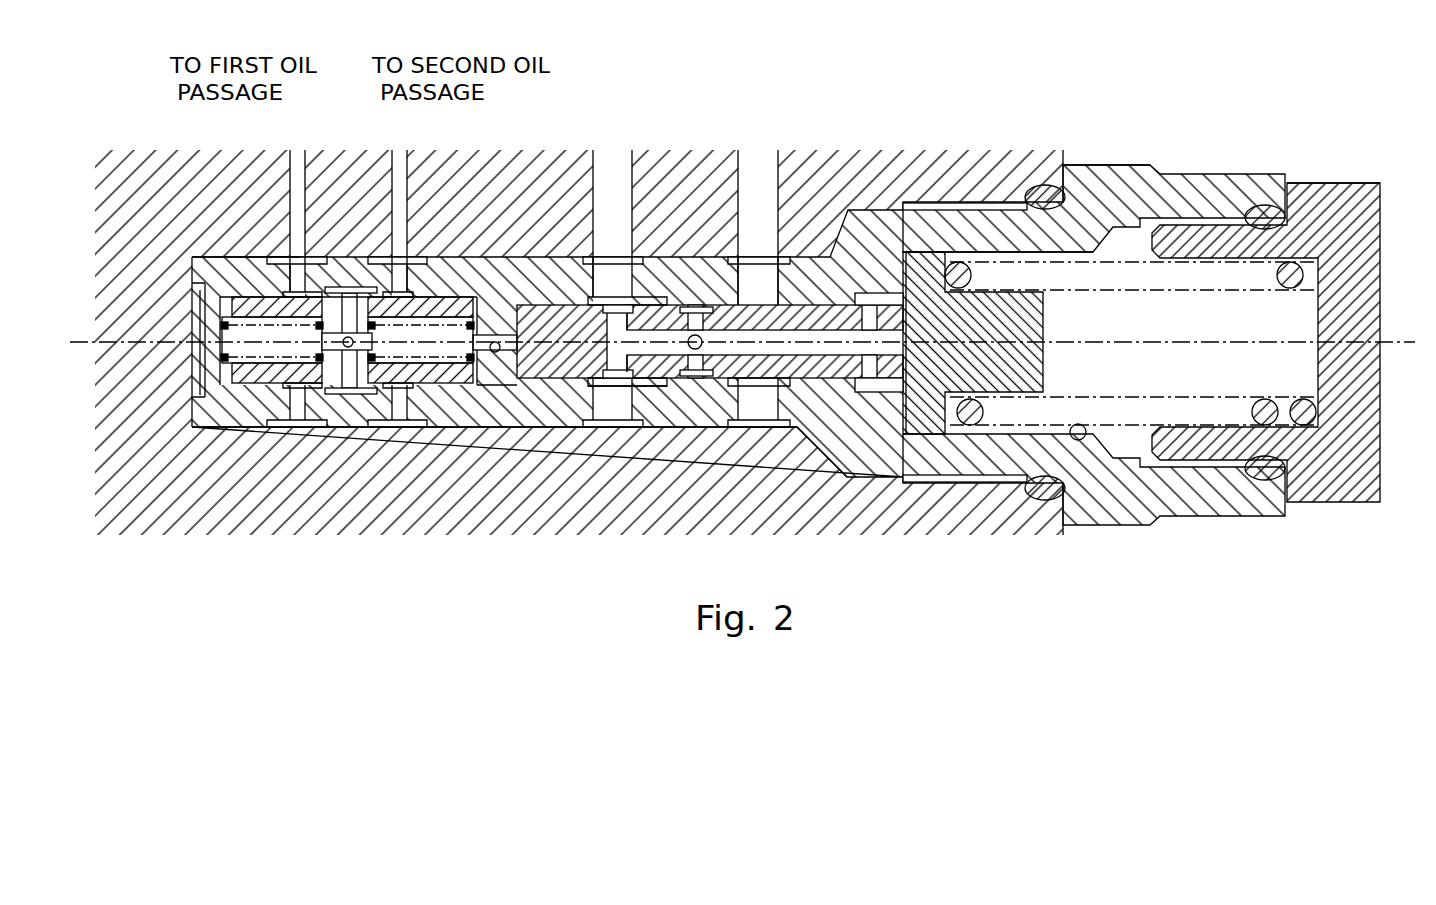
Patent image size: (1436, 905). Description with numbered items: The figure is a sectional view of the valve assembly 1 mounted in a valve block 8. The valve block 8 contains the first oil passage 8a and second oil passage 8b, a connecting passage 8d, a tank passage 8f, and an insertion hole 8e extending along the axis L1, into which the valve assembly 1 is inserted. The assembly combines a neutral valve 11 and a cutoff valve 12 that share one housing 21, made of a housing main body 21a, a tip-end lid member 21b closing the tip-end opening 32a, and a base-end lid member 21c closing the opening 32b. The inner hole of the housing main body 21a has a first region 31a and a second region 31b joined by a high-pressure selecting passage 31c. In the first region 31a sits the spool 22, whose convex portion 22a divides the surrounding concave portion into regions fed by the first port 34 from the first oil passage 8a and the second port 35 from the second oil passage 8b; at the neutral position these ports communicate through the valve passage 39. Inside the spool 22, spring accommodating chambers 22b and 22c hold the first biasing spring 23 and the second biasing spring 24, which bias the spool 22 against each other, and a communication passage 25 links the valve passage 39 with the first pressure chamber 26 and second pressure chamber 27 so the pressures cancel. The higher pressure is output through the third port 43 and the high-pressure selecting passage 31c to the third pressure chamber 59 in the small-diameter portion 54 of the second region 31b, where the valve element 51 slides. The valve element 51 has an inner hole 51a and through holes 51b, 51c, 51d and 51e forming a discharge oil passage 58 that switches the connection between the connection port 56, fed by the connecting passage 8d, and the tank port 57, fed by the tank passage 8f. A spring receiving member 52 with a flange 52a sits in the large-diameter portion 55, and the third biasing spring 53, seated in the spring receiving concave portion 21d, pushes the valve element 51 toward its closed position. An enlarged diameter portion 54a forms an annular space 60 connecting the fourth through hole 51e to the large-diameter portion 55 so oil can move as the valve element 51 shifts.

The valve assembly 1 is at (1262, 72).
The valve block 8 is at (925, 160).
The first oil passage 8a is at (297, 146).
The second oil passage 8b is at (398, 146).
The connecting passage 8d is at (612, 150).
The insertion hole 8e is at (520, 432).
The tank passage 8f is at (760, 150).
The neutral valve 11 is at (215, 232).
The cutoff valve 12 is at (1145, 132).
The housing 21 is at (547, 343).
The housing main body 21a is at (690, 432).
The tip-end lid member 21b is at (150, 359).
The base-end lid member 21c is at (1340, 200).
The spring receiving concave portion 21d is at (1235, 262).
The spool 22 is at (347, 338).
The convex portion 22a is at (342, 292).
The spring accommodating chamber 22b is at (300, 372).
The spring accommodating chamber 22c is at (425, 372).
The first biasing spring 23 is at (205, 328).
The second biasing spring 24 is at (488, 330).
The communication passage 25 is at (355, 392).
The first pressure chamber 26 is at (232, 398).
The second pressure chamber 27 is at (470, 385).
The first region 31a is at (460, 300).
The second region 31b is at (990, 262).
The high-pressure selecting passage 31c is at (518, 428).
The opening 32a is at (200, 292).
The opening 32b is at (1293, 500).
The first port 34 is at (292, 266).
The second port 35 is at (408, 272).
The valve passage 39 is at (350, 284).
The third port 43 is at (530, 322).
The valve element 51 is at (710, 376).
The inner hole 51a is at (808, 322).
The first through hole 51b is at (600, 346).
The second through hole 51c is at (692, 318).
The third through hole 51d is at (695, 378).
The fourth through hole 51e is at (872, 300).
The spring receiving member 52 is at (1028, 348).
The flange 52a is at (908, 430).
The third biasing spring 53 is at (1312, 418).
The small-diameter portion 54 is at (718, 305).
The enlarged diameter portion 54a is at (885, 300).
The large-diameter portion 55 is at (1080, 440).
The connection port 56 is at (605, 263).
The tank port 57 is at (770, 265).
The discharge oil passage 58 is at (640, 402).
The third pressure chamber 59 is at (590, 402).
The space 60 is at (822, 420).
The axis L1 is at (1395, 340).